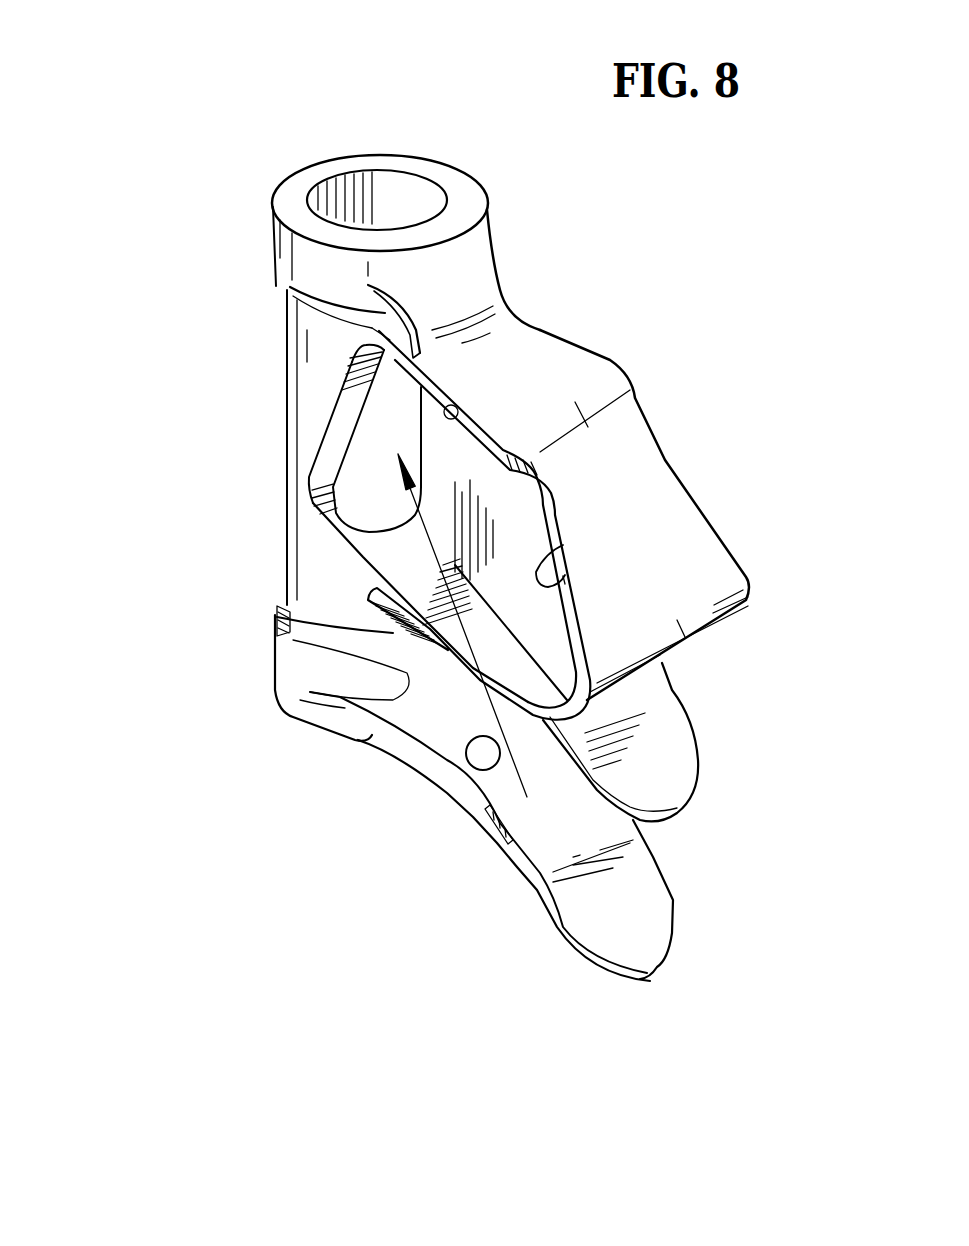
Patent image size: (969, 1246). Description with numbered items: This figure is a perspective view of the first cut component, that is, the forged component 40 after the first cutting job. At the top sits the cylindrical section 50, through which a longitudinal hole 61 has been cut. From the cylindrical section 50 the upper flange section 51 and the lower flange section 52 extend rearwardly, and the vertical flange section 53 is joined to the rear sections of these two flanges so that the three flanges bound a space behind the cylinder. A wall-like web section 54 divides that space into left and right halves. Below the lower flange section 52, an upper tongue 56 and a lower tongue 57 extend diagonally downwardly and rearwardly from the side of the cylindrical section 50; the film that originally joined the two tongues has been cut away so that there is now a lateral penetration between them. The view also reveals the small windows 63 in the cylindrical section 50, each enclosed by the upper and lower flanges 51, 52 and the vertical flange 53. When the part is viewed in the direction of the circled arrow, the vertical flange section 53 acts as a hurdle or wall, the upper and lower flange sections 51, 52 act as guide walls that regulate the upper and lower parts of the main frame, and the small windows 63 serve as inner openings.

The forged component 40 is at (257, 262).
The cylindrical section 50 is at (277, 223).
The upper flange section 51 is at (448, 405).
The lower flange section 52 is at (280, 612).
The vertical flange section 53 is at (563, 545).
The web section 54 is at (514, 450).
The upper tongue 56 is at (677, 815).
The lower tongue 57 is at (567, 935).
The longitudinal hole 61 is at (413, 208).
The small window 63 is at (355, 420).